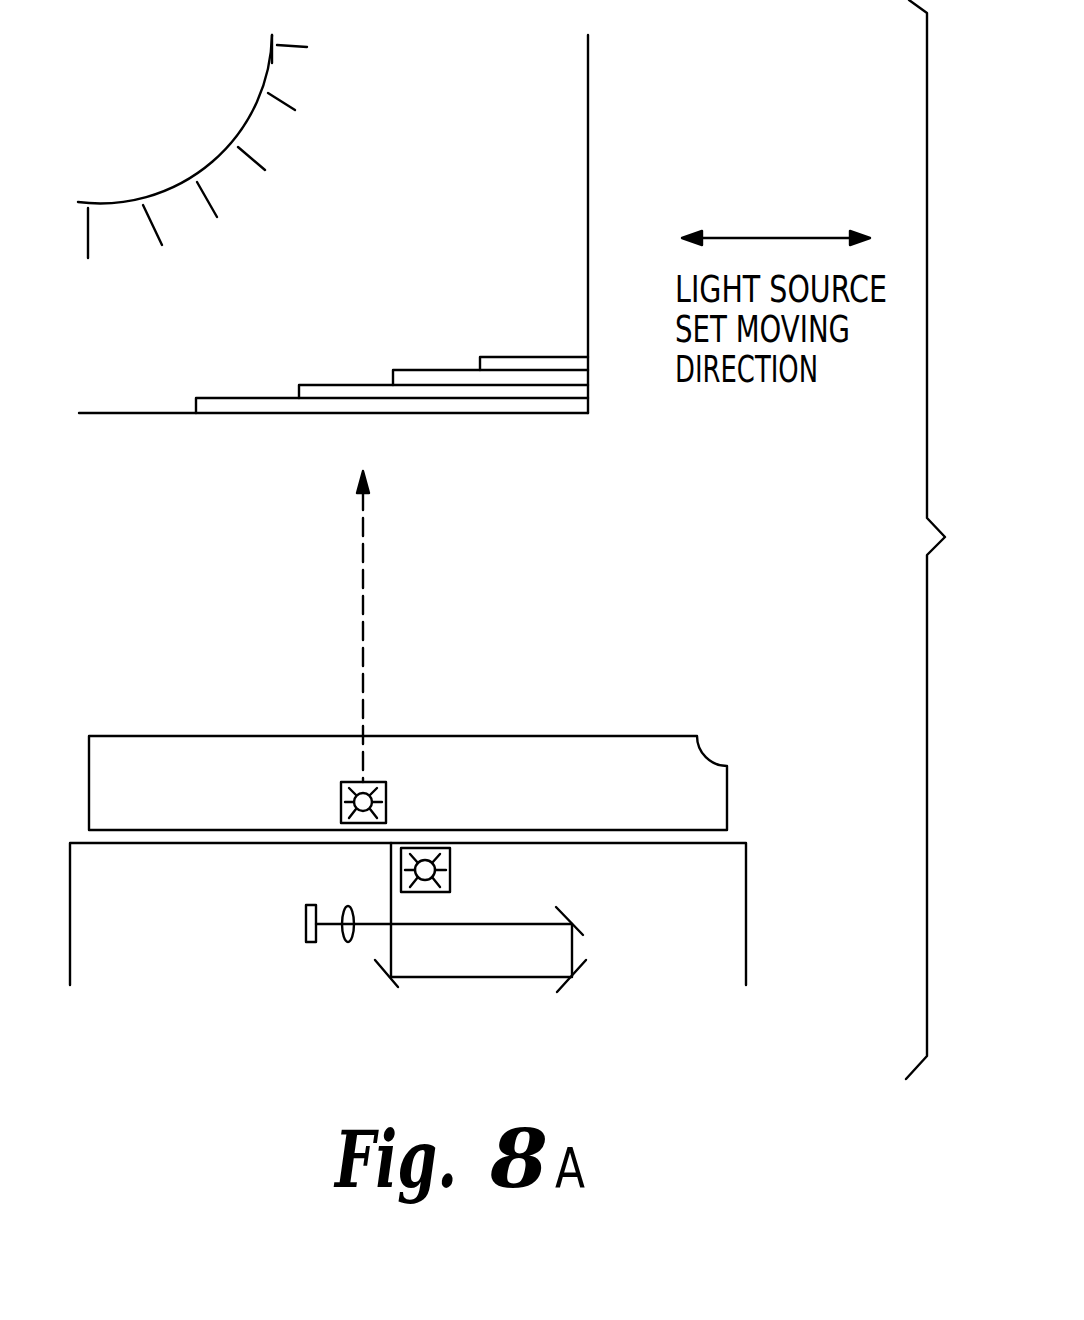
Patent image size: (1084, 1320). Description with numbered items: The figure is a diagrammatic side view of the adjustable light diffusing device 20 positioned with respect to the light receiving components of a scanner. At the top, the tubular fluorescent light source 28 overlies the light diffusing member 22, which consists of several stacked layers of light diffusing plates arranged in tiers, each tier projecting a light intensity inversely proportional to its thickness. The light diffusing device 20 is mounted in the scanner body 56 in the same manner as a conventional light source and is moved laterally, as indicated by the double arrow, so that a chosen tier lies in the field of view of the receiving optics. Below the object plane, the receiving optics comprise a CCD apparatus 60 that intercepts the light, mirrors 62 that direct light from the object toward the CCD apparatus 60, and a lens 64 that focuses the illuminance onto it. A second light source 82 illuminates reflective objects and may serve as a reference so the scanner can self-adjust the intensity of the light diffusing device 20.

The light source 28 is at (273, 63).
The light diffusing member 22 is at (588, 401).
The light diffusing device 20 is at (386, 797).
The second light source 82 is at (450, 878).
The scanner body 56 is at (746, 873).
The CCD apparatus 60 is at (297, 950).
The lens 64 is at (349, 950).
The mirrors 62 is at (398, 987).